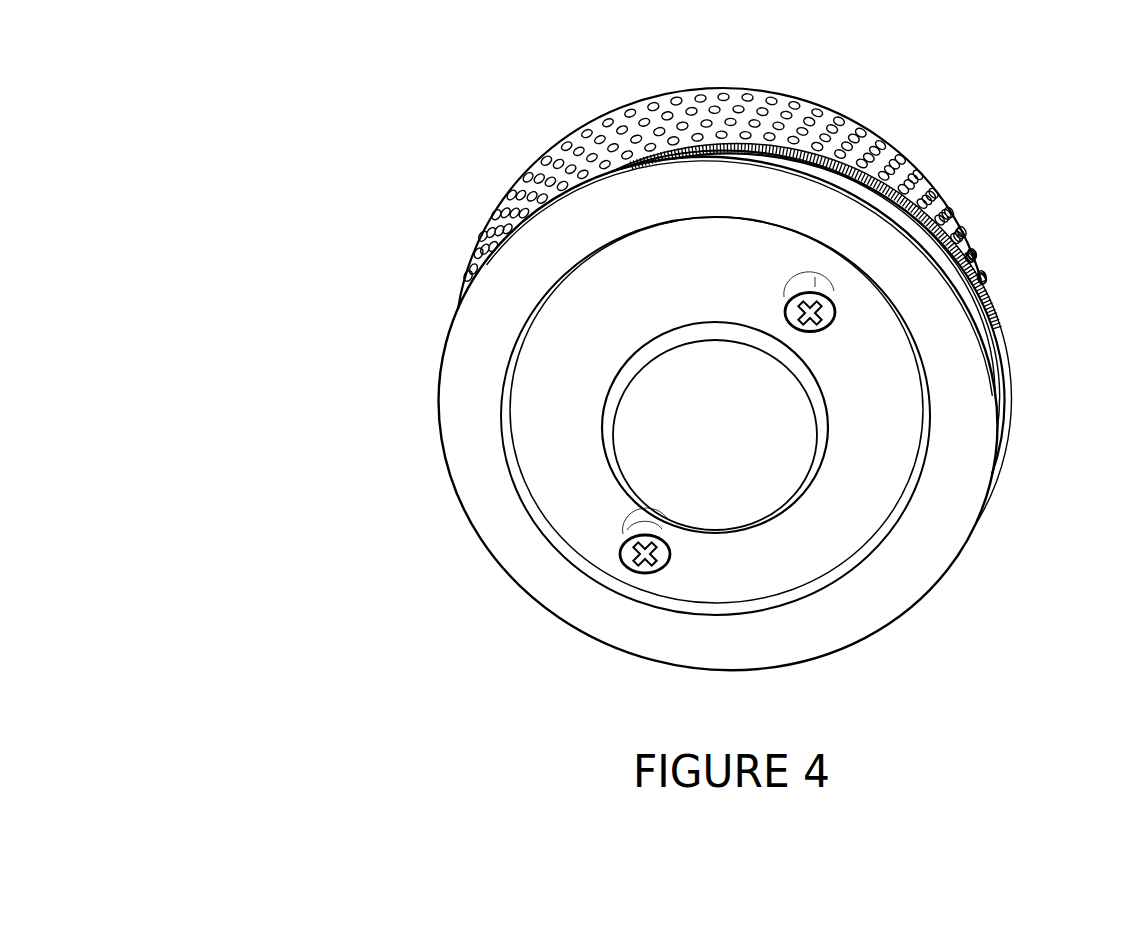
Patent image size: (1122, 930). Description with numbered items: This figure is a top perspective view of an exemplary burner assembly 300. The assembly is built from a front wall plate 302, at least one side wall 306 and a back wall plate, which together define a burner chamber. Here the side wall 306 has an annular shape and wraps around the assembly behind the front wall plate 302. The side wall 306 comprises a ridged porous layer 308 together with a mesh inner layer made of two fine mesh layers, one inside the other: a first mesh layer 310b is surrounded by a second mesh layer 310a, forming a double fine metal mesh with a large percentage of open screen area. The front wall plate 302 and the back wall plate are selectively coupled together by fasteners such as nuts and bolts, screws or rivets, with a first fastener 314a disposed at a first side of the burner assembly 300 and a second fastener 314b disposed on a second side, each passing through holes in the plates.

The burner assembly 300 is at (651, 383).
The front wall plate 302 is at (777, 192).
The side wall 306 is at (786, 84).
The ridged porous layer 308 is at (923, 208).
The second mesh layer 310a is at (950, 233).
The first mesh layer 310b is at (984, 312).
The first fastener 314a is at (644, 574).
The second fastener 314b is at (831, 323).